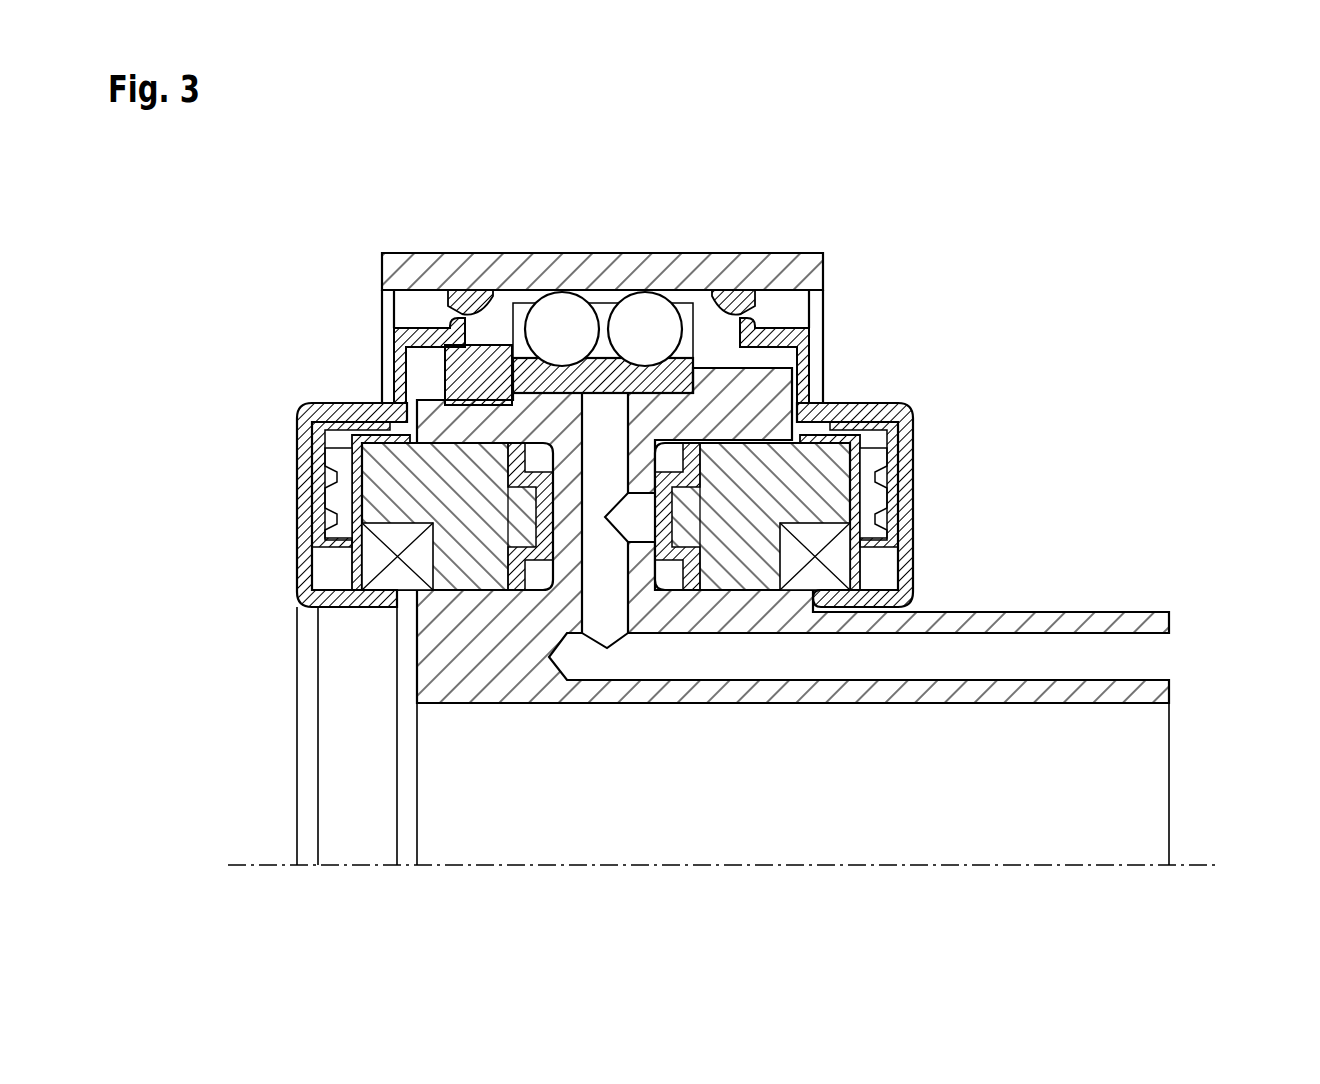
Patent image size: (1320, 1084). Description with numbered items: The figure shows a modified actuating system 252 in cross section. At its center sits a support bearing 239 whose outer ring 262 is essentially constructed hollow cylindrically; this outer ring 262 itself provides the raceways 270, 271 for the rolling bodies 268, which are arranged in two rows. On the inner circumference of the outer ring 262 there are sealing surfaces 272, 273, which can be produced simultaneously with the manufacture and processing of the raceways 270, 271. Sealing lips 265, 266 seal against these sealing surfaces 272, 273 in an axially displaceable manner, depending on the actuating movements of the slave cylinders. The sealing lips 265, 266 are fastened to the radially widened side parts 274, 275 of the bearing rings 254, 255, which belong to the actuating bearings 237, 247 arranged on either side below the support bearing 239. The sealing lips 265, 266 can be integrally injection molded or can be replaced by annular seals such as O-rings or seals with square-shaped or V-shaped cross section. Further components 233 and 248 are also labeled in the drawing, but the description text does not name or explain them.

The rotor carrier 233 is at (440, 605).
The actuating bearing 237 is at (318, 570).
The support bearing 239 is at (618, 256).
The actuating bearing 247 is at (912, 545).
The stator 248 is at (756, 604).
The modified actuating system 252 is at (734, 487).
The bearing ring 254 is at (300, 476).
The bearing ring 255 is at (908, 506).
The outer ring 262 is at (792, 273).
The sealing lip 265 is at (478, 300).
The sealing lip 266 is at (737, 293).
The rolling bodies 268 is at (603, 280).
The raceway 270 is at (562, 292).
The raceway 271 is at (641, 292).
The sealing surface 272 is at (422, 290).
The sealing surface 273 is at (778, 298).
The radially widened side part 274 is at (398, 382).
The radially widened side part 275 is at (808, 374).